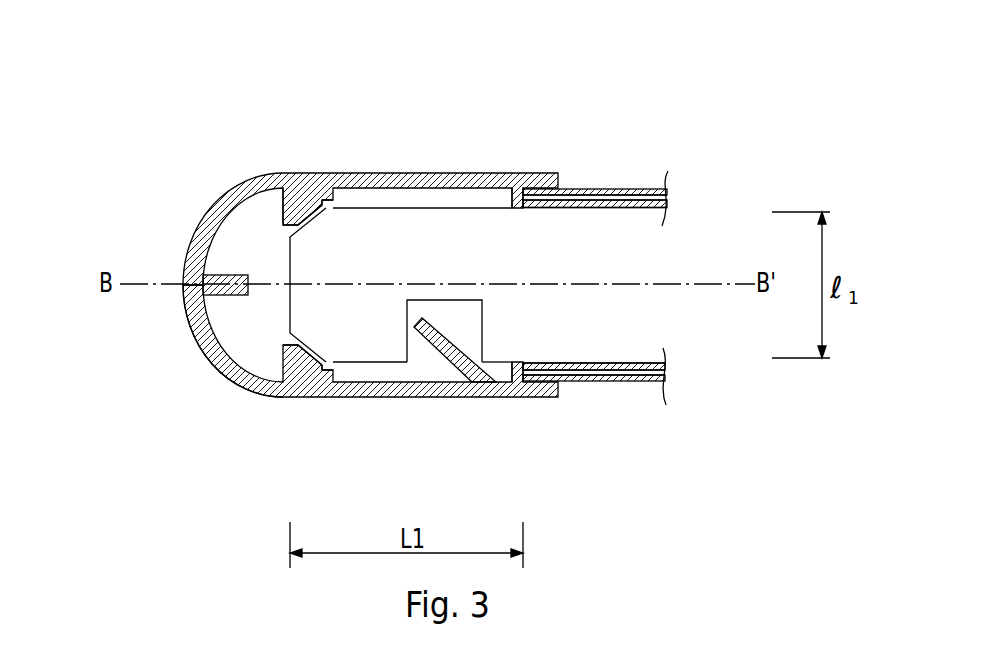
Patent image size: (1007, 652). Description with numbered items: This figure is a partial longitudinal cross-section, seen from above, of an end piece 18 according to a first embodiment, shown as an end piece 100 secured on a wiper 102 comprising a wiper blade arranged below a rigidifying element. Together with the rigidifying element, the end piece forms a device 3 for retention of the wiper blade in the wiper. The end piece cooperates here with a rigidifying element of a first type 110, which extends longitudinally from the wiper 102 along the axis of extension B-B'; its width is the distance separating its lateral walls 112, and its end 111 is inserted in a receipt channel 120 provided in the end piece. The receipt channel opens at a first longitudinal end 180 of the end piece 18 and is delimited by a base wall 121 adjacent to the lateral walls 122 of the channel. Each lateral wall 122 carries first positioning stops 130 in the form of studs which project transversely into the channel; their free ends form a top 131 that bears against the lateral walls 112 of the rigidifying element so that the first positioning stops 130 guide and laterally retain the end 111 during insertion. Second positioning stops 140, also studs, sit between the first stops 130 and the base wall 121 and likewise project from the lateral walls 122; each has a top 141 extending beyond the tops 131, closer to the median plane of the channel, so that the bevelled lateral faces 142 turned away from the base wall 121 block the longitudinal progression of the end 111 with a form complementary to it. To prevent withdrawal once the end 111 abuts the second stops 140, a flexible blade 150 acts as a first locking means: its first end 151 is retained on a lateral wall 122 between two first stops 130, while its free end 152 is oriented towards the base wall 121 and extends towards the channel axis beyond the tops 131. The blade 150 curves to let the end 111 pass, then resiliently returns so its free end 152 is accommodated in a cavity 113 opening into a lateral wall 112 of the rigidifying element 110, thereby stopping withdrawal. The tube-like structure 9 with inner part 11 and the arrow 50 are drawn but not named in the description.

The device for retention of the wiper blade 3 is at (589, 99).
The end piece 18 is at (224, 169).
The end piece 100 is at (408, 290).
The wiper 102 is at (638, 167).
The outer tube 9 is at (634, 188).
The inner tube 11 is at (672, 204).
The rigidifying element of a first type 110 is at (668, 262).
The end of the rigidifying element 111 is at (462, 275).
The lateral walls of the rigidifying element 112 is at (553, 209).
The cavity 113 is at (448, 317).
The receipt channel 120 is at (270, 327).
The base wall 121 is at (222, 337).
The lateral walls of the channel 122 is at (398, 207).
The first positioning stops 130 is at (323, 203).
The top of the first positioning stop 131 is at (326, 210).
The second positioning stops 140 is at (296, 200).
The top of the second positioning stop 141 is at (290, 237).
The lateral faces of the second stops 142 is at (300, 205).
The flexible blade 150 is at (455, 383).
The first end of the flexible blade 151 is at (493, 386).
The free end of the flexible blade 152 is at (414, 330).
The first longitudinal end of the end piece 180 is at (577, 411).
The opening 50 is at (474, 390).